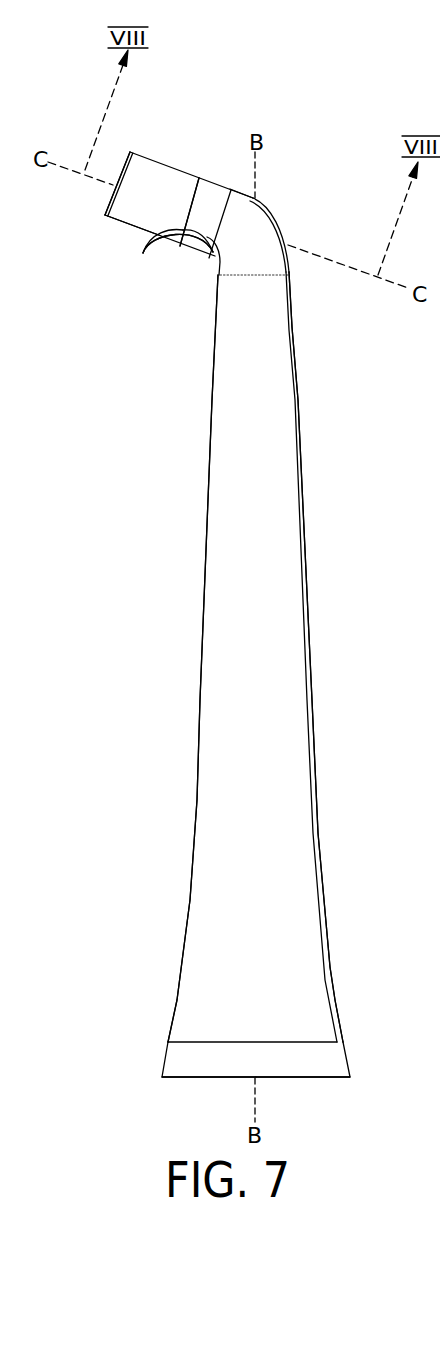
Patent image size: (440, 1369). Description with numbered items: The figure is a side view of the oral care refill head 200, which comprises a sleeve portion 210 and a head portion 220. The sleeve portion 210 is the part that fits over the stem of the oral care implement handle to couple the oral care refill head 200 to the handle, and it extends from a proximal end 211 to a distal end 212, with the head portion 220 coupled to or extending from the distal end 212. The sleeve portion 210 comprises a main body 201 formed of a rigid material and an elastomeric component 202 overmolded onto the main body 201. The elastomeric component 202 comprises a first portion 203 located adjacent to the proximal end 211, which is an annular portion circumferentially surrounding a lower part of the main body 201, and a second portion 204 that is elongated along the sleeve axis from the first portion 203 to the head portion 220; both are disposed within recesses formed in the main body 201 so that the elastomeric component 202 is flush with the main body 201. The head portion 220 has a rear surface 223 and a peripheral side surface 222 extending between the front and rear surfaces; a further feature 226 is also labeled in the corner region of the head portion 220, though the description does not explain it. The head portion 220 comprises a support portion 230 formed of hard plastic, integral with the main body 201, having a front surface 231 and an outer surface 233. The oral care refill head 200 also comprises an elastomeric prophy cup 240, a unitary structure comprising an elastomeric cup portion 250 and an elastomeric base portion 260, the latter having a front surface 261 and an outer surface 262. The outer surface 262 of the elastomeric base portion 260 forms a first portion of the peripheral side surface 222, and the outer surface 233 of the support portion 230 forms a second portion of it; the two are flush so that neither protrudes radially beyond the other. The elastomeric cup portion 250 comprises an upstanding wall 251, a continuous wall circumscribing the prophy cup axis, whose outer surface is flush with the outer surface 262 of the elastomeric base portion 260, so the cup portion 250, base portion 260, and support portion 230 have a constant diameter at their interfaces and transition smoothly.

The oral care refill head 200 is at (100, 662).
The main body 201 is at (230, 717).
The elastomeric component 202 is at (183, 1062).
The first portion 203 is at (312, 1062).
The second portion 204 is at (310, 615).
The sleeve portion 210 is at (243, 547).
The proximal end 211 is at (290, 1080).
The distal end 212 is at (262, 272).
The head portion 220 is at (212, 161).
The peripheral side surface 222 is at (214, 214).
The rear surface 223 is at (256, 207).
The inner corner wall 226 is at (280, 223).
The support portion 230 is at (215, 258).
The front surface 231 is at (143, 253).
The outer surface 233 is at (258, 200).
The elastomeric prophy cup 240 is at (120, 242).
The elastomeric cup portion 250 is at (140, 173).
The upstanding wall 251 is at (122, 200).
The elastomeric base portion 260 is at (197, 243).
The front surface 261 is at (190, 213).
The outer surface 262 is at (183, 237).